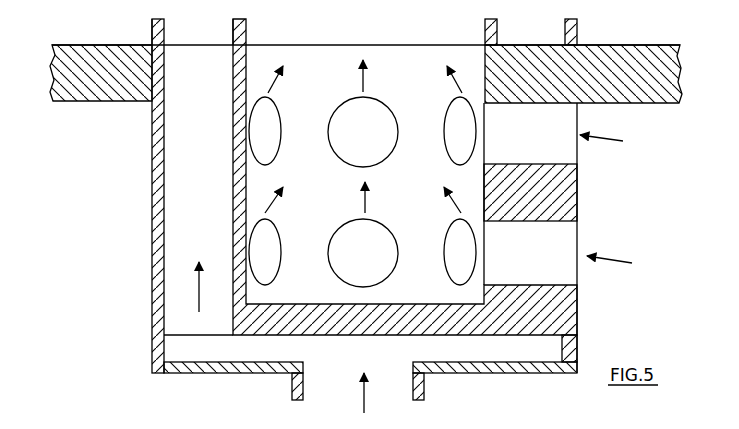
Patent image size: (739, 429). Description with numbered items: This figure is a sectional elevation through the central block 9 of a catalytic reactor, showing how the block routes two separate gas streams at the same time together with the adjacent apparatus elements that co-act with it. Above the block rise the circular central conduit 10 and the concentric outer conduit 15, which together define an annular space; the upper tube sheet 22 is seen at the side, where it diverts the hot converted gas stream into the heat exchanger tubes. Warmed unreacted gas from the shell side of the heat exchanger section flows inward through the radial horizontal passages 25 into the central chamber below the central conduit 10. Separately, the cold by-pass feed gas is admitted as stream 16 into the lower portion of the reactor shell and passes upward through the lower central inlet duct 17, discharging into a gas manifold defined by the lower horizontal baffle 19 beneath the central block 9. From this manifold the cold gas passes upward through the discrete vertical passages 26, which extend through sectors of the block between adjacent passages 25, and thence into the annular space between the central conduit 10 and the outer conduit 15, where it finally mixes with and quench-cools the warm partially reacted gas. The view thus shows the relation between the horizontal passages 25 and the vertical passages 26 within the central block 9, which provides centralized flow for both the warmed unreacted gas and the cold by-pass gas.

The central block 9 is at (152, 233).
The central conduit 10 is at (246, 25).
The concentric outer conduit 15 is at (153, 40).
The cold by-pass feed gas stream 16 is at (365, 391).
The lower central inlet duct 17 is at (292, 385).
The lower horizontal baffle 19 is at (214, 373).
The upper tube sheet 22 is at (66, 101).
The radial horizontal passages 25 is at (334, 140).
The vertical passages 26 is at (165, 58).